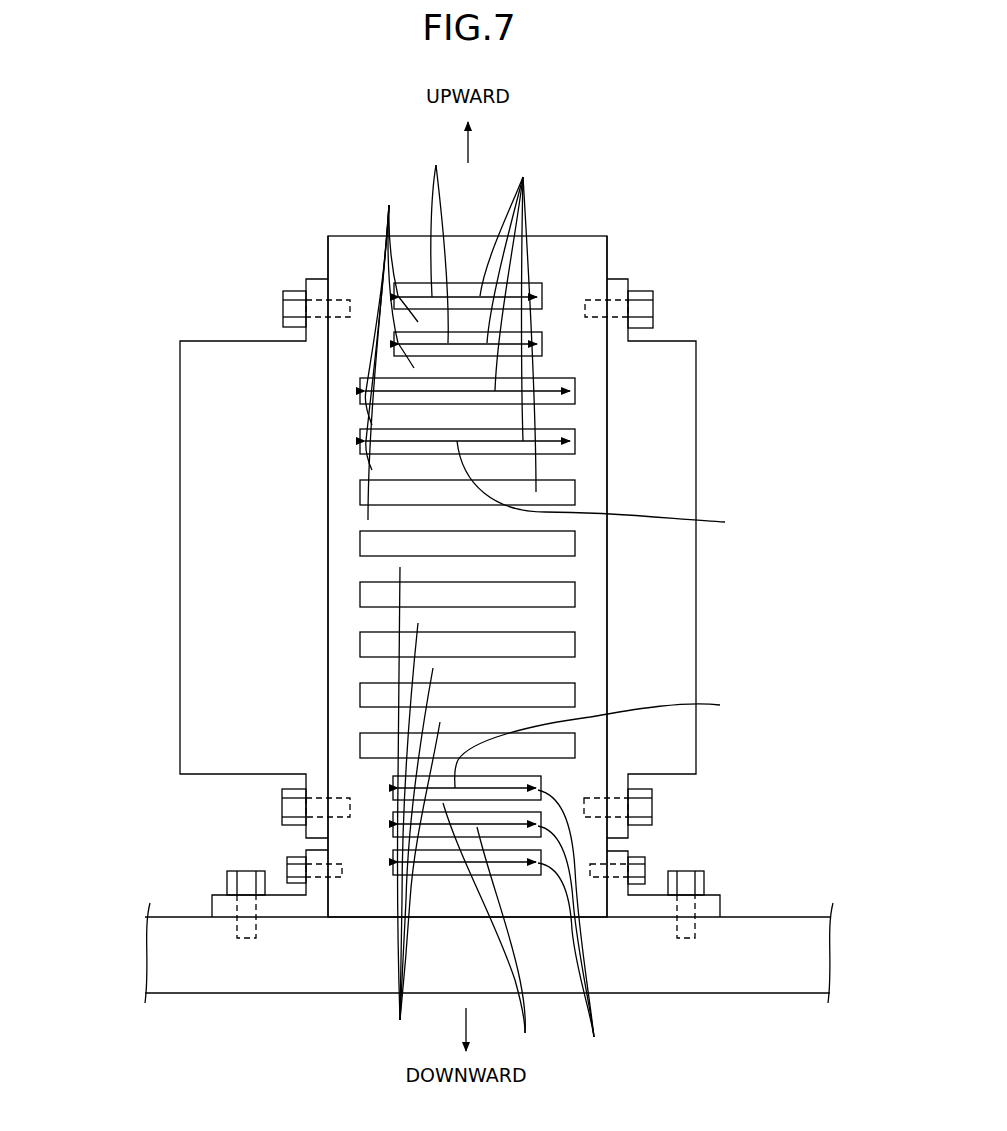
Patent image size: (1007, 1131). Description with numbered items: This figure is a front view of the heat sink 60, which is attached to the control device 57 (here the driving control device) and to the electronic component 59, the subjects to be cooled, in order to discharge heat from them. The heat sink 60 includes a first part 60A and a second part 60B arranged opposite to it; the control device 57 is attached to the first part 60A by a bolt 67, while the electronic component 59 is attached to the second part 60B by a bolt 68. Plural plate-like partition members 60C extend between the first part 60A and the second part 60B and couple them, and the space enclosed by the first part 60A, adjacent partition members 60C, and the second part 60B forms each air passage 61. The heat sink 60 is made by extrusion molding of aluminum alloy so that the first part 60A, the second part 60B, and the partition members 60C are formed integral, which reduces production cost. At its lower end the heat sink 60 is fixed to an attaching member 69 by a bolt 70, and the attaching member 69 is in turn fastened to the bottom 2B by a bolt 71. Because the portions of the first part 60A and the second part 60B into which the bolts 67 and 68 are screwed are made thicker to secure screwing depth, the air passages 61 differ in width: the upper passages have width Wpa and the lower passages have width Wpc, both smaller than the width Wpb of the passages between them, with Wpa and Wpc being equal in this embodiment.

The bottom 2B is at (797, 928).
The control device 57 is at (190, 395).
The electronic component 59 is at (678, 360).
The heat sink 60 is at (233, 157).
The first part 60A is at (338, 493).
The second part 60B is at (588, 483).
The partition member 60C is at (396, 614).
The air passage 61 is at (370, 545).
The bolt 67 is at (290, 300).
The bolt 68 is at (653, 296).
The attaching member 69 is at (216, 903).
The bolt 70 is at (295, 862).
The bolt 71 is at (245, 888).
The width of upper air passage Wpa is at (430, 240).
The width of middle air passage Wpb is at (617, 489).
The width of lower air passage Wpc is at (609, 872).